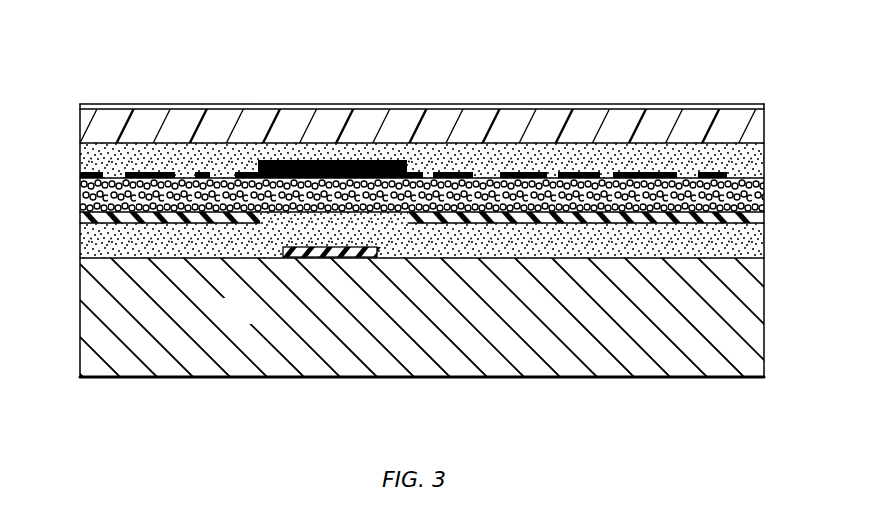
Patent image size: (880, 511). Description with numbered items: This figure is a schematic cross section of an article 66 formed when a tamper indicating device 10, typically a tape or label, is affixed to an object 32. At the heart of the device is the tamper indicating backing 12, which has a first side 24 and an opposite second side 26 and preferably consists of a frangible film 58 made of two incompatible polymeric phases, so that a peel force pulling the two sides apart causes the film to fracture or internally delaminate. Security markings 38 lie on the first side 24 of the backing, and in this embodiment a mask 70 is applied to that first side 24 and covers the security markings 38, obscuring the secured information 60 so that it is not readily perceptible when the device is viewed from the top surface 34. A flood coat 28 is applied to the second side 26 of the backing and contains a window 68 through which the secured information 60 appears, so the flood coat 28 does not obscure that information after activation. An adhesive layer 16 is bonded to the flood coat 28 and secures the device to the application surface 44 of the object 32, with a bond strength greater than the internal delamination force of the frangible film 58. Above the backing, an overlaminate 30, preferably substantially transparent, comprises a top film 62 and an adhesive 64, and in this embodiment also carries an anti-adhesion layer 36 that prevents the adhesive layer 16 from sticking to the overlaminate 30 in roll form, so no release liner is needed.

The tamper indicating device 10 is at (63, 121).
The tamper indicating backing 12 is at (70, 210).
The adhesive layer 16 is at (618, 240).
The first side 24 is at (747, 173).
The second side 26 is at (714, 216).
The flood coat 28 is at (480, 222).
The overlaminate 30 is at (772, 104).
The object 32 is at (226, 325).
The top surface 34 is at (772, 85).
The anti-adhesion layer 36 is at (207, 106).
The security markings 38 is at (198, 172).
The application surface 44 is at (166, 258).
The frangible film 58 is at (118, 198).
The secured information 60 is at (305, 250).
The top film 62 is at (518, 130).
The adhesive 64 is at (245, 150).
The article 66 is at (606, 64).
The window 68 is at (372, 222).
The mask 70 is at (343, 160).